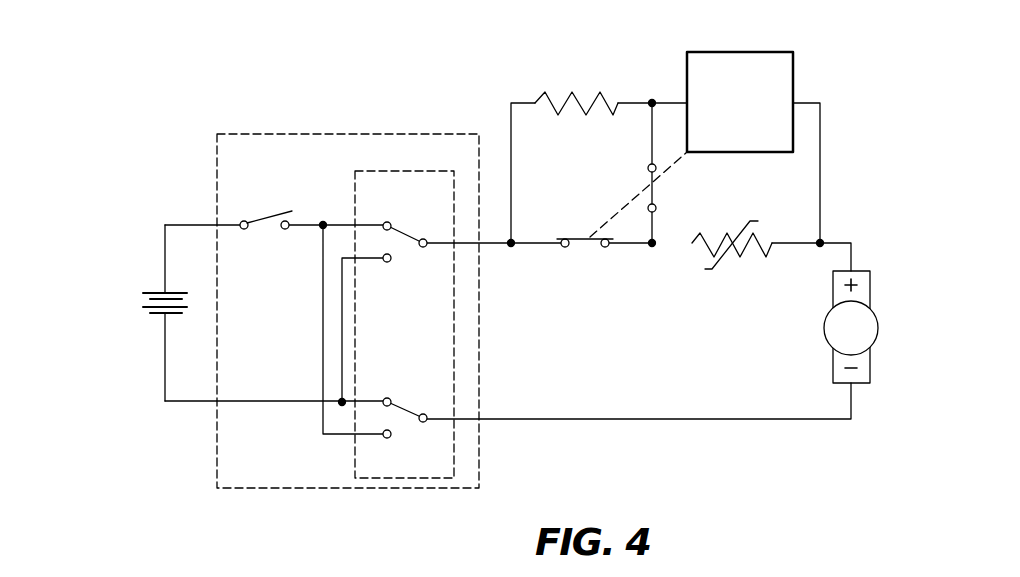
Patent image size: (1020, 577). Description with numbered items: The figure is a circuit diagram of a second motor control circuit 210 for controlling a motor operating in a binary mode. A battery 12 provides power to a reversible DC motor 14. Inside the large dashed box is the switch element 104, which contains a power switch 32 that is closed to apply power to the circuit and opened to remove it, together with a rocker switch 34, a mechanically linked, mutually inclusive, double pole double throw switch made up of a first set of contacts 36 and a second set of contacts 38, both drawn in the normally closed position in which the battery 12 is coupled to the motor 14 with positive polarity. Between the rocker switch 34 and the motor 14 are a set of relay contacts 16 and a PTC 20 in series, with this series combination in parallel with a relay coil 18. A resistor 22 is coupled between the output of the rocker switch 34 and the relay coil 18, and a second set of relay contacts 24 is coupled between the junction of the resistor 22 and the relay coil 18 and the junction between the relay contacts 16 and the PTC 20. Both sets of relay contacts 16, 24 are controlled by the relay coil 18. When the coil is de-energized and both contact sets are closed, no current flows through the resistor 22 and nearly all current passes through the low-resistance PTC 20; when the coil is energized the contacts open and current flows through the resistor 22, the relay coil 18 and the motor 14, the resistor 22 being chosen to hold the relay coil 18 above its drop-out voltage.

The second motor control circuit 210 is at (159, 167).
The battery 12 is at (152, 291).
The switch element 104 is at (283, 167).
The power switch 32 is at (259, 219).
The rocker switch 34 is at (398, 203).
The first set of contacts 36 is at (400, 230).
The second set of contacts 38 is at (399, 413).
The relay contacts 16 is at (593, 243).
The second set of relay contacts 24 is at (657, 202).
The resistor 22 is at (568, 93).
The relay coil 18 is at (727, 140).
The PTC 20 is at (748, 249).
The reversible DC motor 14 is at (838, 340).